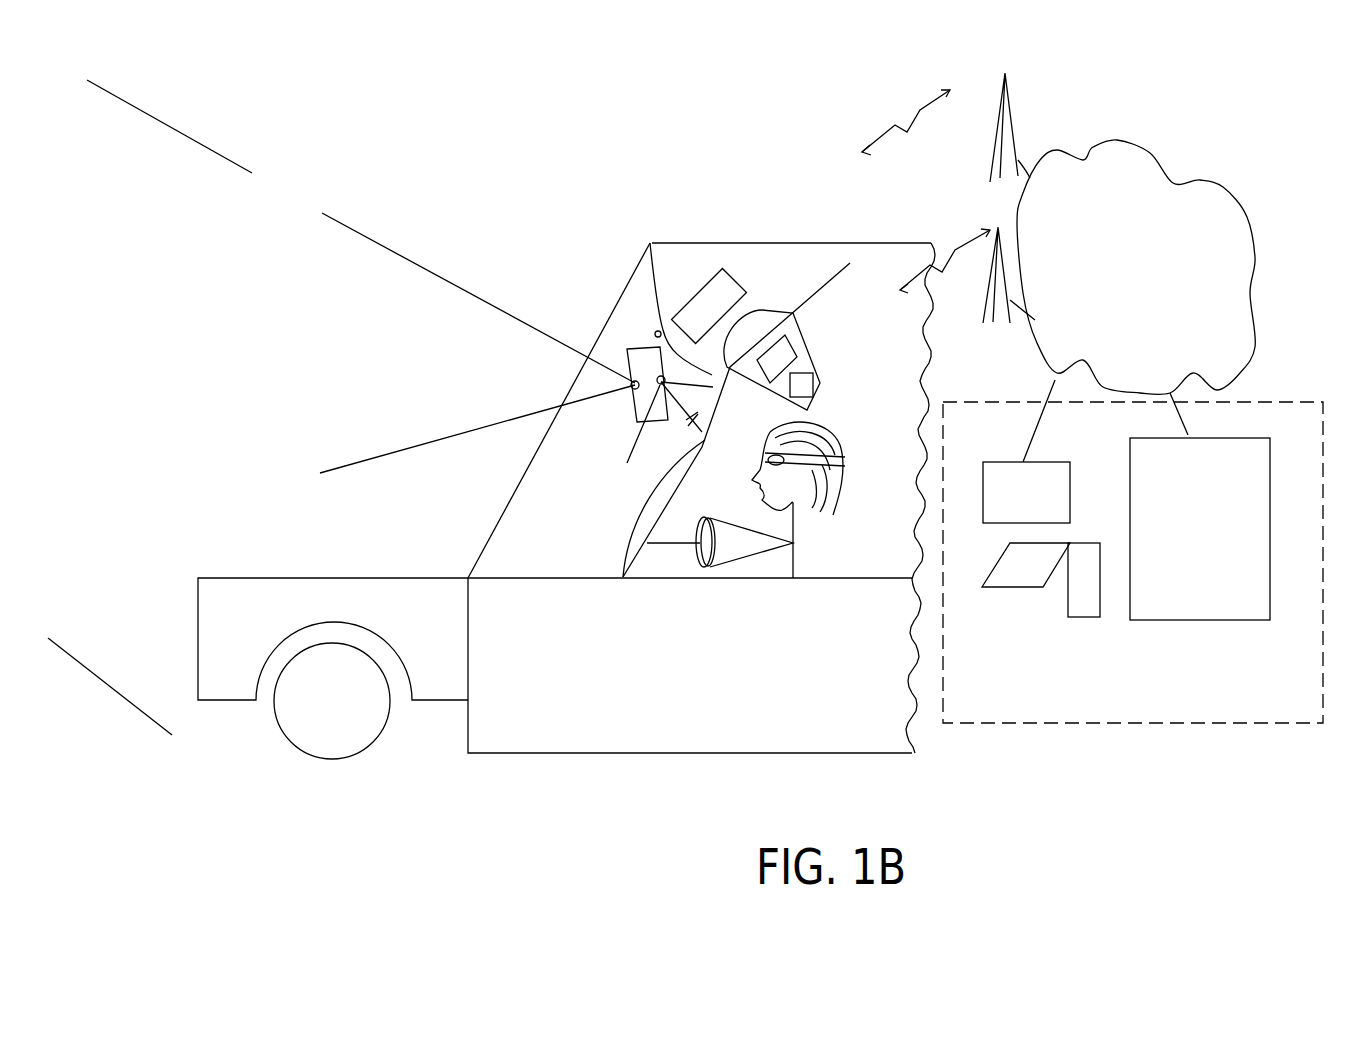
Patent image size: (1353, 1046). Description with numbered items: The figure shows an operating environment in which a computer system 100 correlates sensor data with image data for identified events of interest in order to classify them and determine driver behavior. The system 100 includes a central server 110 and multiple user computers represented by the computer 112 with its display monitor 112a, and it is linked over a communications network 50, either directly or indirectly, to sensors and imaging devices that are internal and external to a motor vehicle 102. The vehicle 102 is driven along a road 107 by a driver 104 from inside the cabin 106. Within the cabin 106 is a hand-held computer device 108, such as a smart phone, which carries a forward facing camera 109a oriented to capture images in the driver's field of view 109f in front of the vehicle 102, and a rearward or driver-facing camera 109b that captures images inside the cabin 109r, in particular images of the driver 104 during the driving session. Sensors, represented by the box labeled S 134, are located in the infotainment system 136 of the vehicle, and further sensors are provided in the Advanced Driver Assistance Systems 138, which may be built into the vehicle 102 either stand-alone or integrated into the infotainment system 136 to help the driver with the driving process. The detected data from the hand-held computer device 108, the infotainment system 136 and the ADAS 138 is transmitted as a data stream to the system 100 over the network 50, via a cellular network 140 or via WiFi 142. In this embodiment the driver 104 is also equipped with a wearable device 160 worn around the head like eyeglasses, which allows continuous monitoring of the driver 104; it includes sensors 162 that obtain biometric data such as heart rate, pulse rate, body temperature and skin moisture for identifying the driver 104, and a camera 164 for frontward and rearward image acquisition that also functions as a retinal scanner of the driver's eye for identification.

The communications network 50 is at (1137, 291).
The system 100 is at (1188, 672).
The motor vehicle 102 is at (720, 680).
The driver 104 is at (805, 537).
The cabin 106 is at (900, 390).
The road 107 is at (157, 381).
The hand-held computer device 108 is at (627, 352).
The forward facing camera 109a is at (632, 388).
The rearward or driver-facing camera 109b is at (626, 442).
The driver's field of view 109f is at (527, 333).
The cabin interior imaging region 109r is at (693, 420).
The central server 110 is at (1220, 602).
The computer 112 is at (1089, 490).
The display monitor 112a is at (995, 462).
The box "S" (sensors) 134 is at (807, 360).
The infotainment system 136 is at (765, 322).
The Advanced Driver Assistance Systems (ADAS) 138 is at (710, 282).
The cellular network 140 is at (988, 257).
The WiFi 142 is at (997, 115).
The wearable device 160 is at (810, 468).
The sensors 162 is at (817, 458).
The camera 164 is at (770, 470).